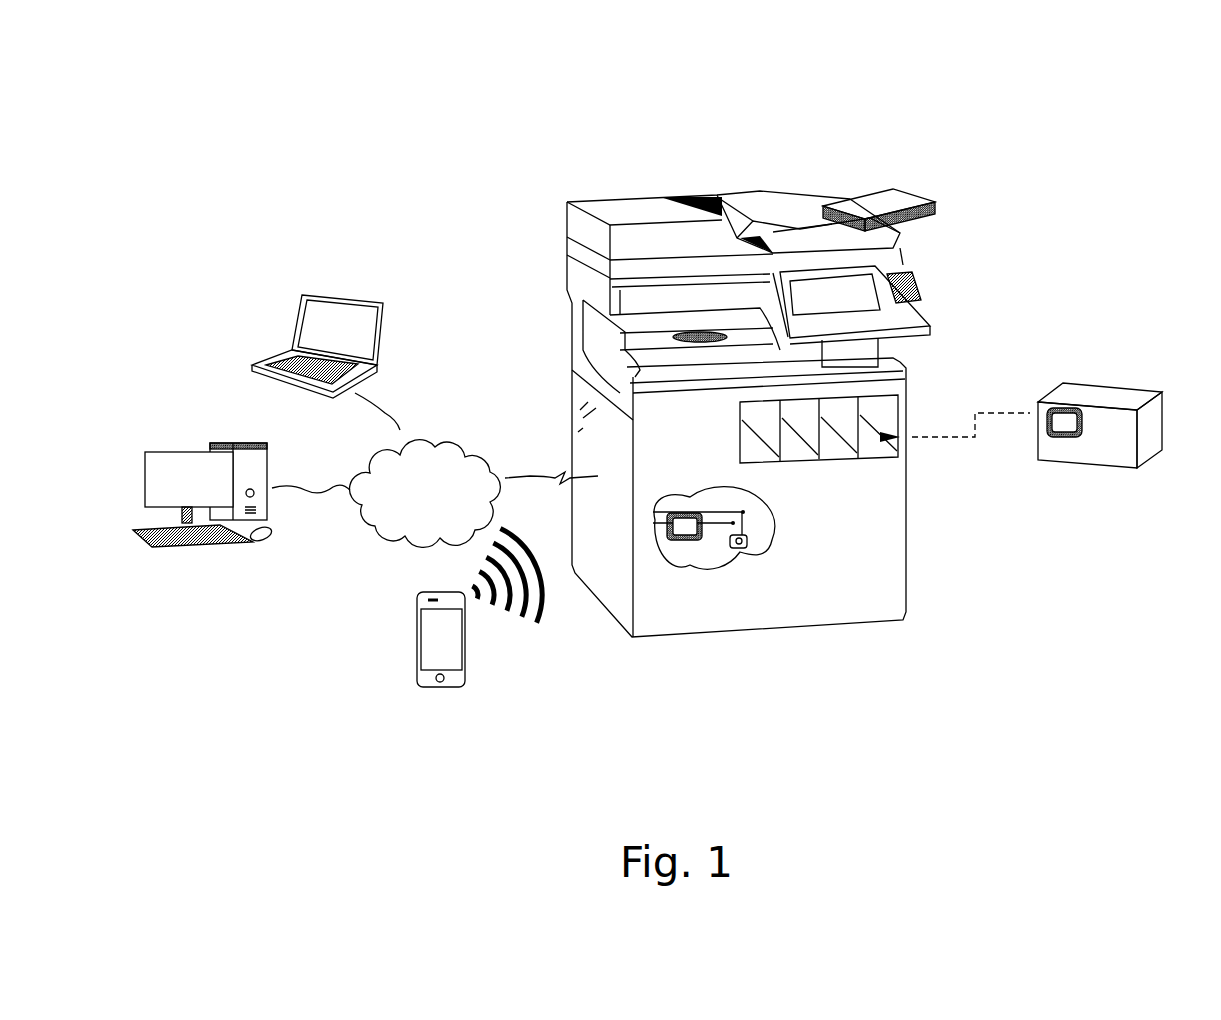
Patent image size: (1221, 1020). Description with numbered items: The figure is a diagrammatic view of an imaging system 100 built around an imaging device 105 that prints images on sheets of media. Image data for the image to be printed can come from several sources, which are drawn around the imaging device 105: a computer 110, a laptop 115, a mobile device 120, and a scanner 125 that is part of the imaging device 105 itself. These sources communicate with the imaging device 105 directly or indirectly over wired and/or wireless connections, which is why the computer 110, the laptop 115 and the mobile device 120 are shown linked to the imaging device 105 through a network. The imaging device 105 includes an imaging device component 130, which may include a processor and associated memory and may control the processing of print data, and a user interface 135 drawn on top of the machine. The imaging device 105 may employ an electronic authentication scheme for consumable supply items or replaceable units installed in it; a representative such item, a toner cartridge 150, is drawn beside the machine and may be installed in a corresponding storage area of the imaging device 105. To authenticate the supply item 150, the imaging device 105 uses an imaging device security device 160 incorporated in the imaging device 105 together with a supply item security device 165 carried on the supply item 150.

The imaging system 100 is at (1042, 66).
The imaging device 105 is at (590, 176).
The computer 110 is at (218, 441).
The laptop 115 is at (330, 295).
The mobile device 120 is at (412, 635).
The scanner 125 is at (567, 216).
The imaging device component 130 is at (692, 508).
The user interface 135 is at (907, 283).
The toner cartridge 150 is at (1150, 392).
The imaging device security device 160 is at (747, 543).
The supply item security device 165 is at (1080, 412).